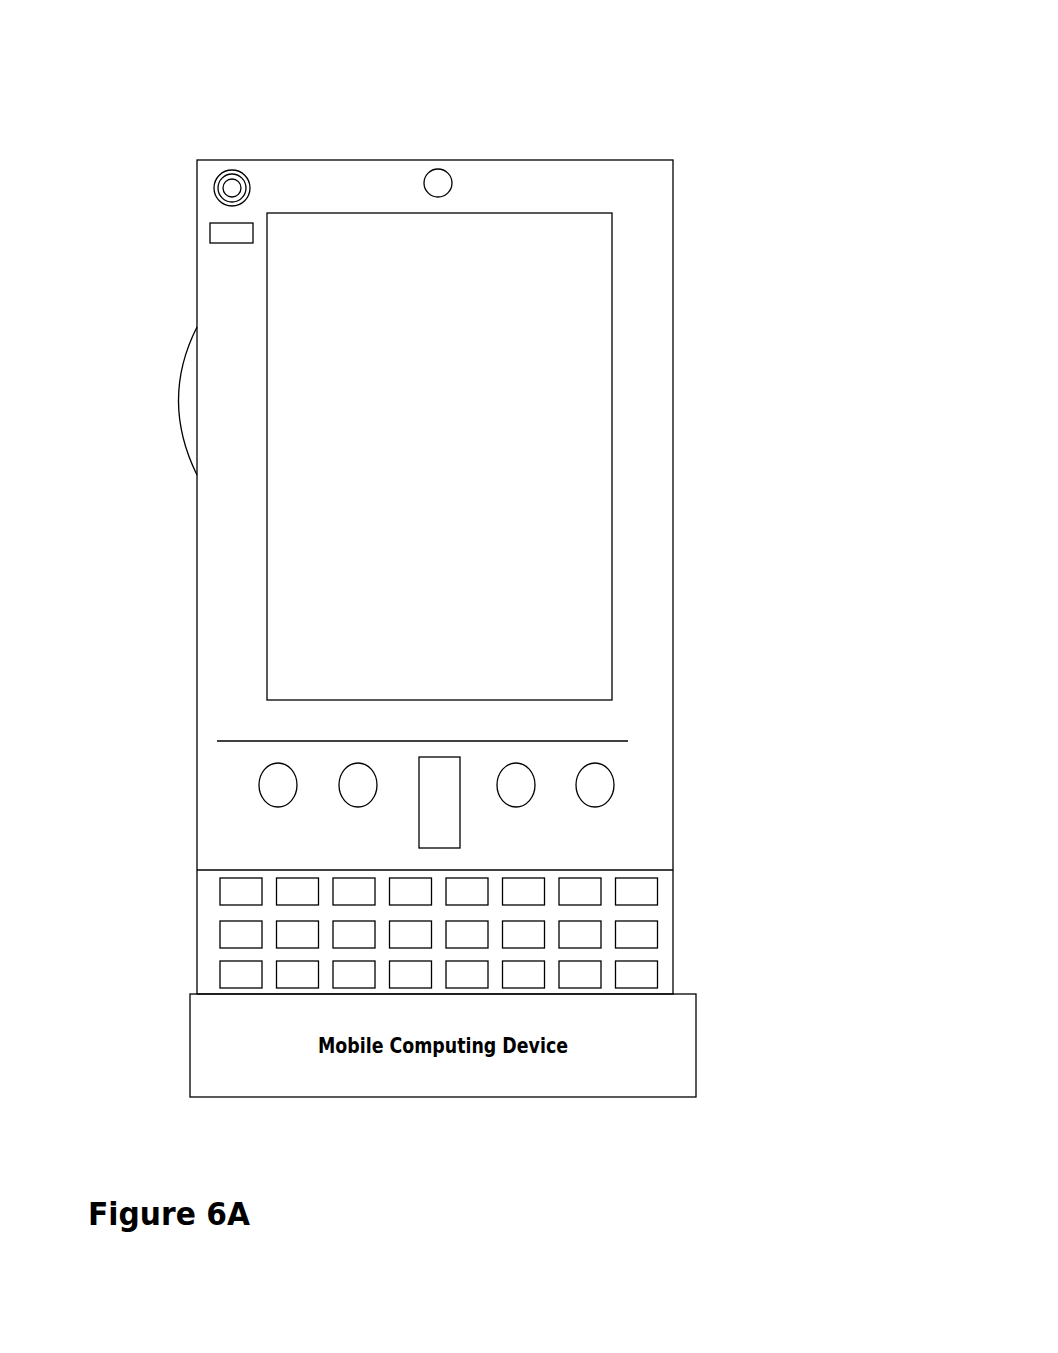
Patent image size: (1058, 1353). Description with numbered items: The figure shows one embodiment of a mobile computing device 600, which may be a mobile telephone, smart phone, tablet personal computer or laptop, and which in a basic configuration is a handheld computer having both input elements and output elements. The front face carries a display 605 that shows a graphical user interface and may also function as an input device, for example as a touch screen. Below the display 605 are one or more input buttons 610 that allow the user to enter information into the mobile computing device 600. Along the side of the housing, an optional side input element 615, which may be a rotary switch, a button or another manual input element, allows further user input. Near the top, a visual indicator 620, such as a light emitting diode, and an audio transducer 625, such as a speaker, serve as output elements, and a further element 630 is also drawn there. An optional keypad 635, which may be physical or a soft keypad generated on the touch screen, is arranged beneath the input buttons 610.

The mobile computing device 600 is at (661, 177).
The display 605 is at (373, 617).
The input buttons 610 is at (440, 808).
The side input element 615 is at (187, 398).
The visual indicator 620 is at (210, 239).
The audio transducer 625 is at (214, 188).
The speaker 630 is at (450, 181).
The keypad 635 is at (206, 979).